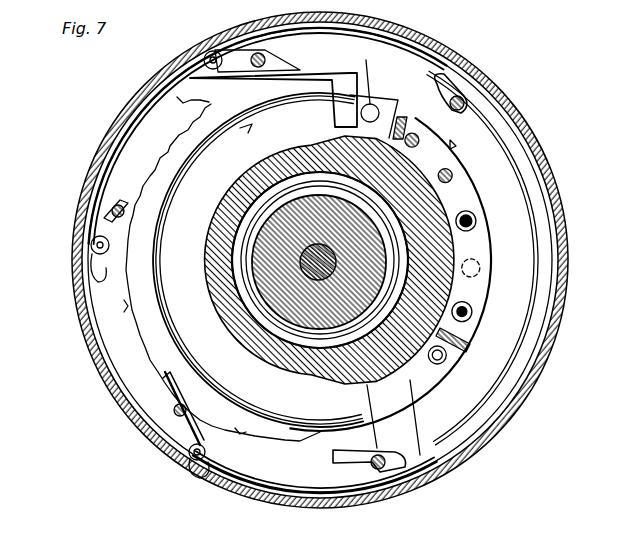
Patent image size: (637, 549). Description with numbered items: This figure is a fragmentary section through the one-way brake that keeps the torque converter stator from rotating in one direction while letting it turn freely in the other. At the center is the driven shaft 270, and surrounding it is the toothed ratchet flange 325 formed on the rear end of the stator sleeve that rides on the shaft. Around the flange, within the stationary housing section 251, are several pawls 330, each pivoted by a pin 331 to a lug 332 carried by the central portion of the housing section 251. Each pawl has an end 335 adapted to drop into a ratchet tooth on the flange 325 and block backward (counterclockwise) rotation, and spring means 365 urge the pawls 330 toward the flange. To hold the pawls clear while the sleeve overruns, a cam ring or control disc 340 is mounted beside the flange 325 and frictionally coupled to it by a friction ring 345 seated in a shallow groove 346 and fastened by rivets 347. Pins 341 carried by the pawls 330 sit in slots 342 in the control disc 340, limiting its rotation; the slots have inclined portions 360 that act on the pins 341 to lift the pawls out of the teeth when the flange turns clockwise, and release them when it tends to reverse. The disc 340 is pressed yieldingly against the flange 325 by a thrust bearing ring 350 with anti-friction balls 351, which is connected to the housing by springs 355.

The housing section 251 is at (290, 508).
The driven shaft 270 is at (278, 240).
The ratchet flange 325 is at (175, 148).
The pawls 330 is at (140, 190).
The pins 331 is at (92, 246).
The lugs 332 is at (92, 264).
The end 335 is at (148, 178).
The control disc 340 is at (400, 63).
The pins 341 is at (112, 211).
The slots 342 is at (460, 100).
The friction ring 345 is at (380, 112).
The groove 346 is at (453, 143).
The rivets 347 is at (553, 114).
The thrust bearing ring 350 is at (465, 200).
The anti-friction balls 351 is at (472, 220).
The springs 355 is at (480, 268).
The inclined portions 360 is at (440, 88).
The spring means 365 is at (245, 465).